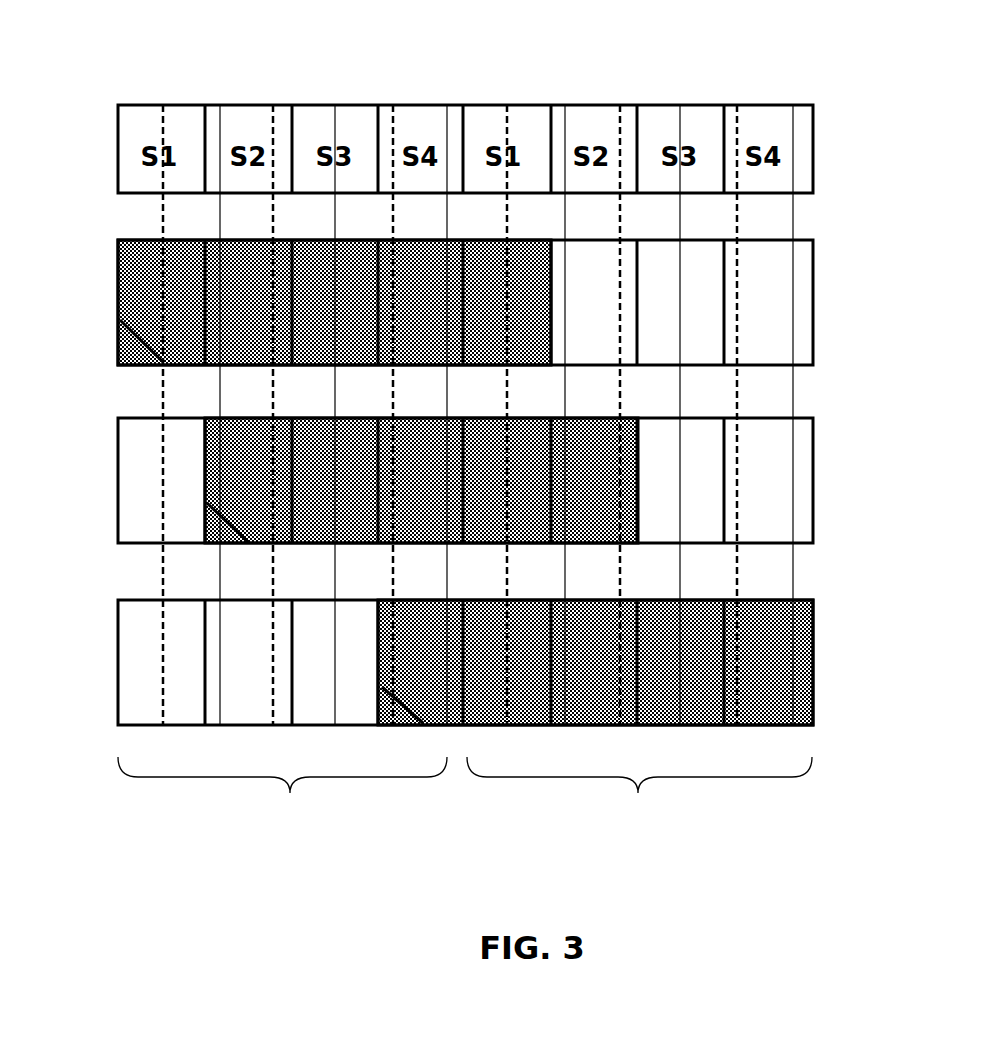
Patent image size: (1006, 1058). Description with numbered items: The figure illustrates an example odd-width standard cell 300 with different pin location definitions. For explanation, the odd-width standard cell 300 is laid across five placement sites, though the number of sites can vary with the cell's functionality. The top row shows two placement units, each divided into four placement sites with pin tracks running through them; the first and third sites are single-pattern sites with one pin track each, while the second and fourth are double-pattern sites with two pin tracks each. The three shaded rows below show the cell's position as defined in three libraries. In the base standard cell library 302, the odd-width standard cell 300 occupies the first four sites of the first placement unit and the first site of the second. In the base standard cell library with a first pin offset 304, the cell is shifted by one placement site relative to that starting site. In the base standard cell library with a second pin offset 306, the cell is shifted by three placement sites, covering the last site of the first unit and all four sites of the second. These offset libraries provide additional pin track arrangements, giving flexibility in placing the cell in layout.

The odd-width standard cell 300 is at (137, 238).
The base standard cell library 302 is at (850, 311).
The base standard cell library with a first pin offset 304 is at (850, 481).
The base standard cell library with a second pin offset 306 is at (850, 670).